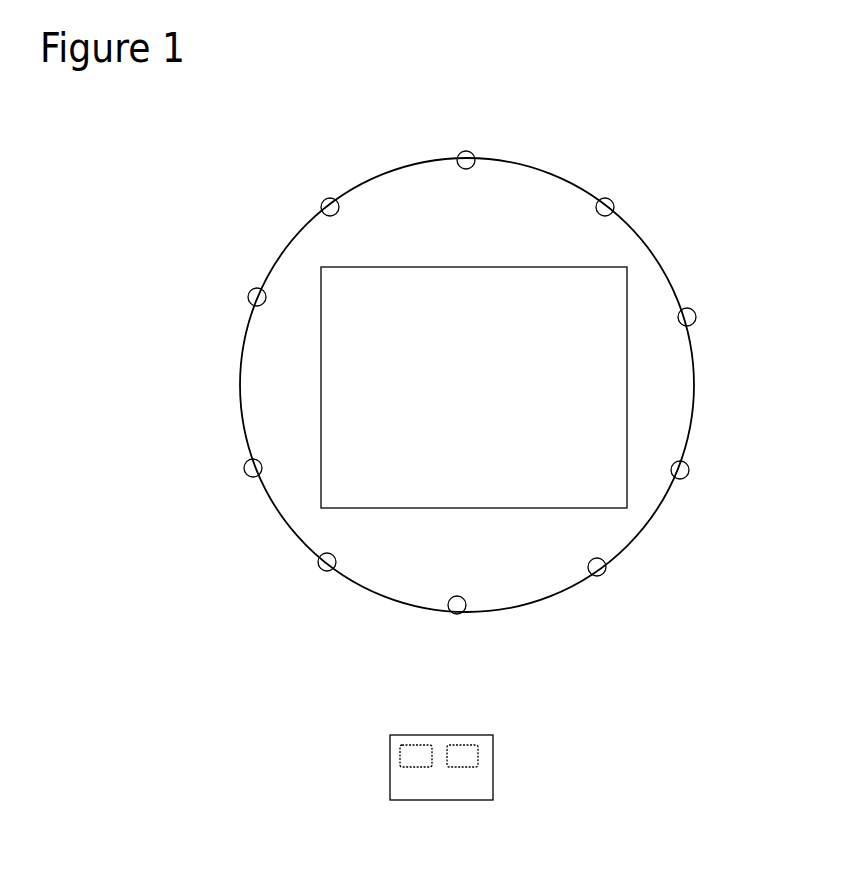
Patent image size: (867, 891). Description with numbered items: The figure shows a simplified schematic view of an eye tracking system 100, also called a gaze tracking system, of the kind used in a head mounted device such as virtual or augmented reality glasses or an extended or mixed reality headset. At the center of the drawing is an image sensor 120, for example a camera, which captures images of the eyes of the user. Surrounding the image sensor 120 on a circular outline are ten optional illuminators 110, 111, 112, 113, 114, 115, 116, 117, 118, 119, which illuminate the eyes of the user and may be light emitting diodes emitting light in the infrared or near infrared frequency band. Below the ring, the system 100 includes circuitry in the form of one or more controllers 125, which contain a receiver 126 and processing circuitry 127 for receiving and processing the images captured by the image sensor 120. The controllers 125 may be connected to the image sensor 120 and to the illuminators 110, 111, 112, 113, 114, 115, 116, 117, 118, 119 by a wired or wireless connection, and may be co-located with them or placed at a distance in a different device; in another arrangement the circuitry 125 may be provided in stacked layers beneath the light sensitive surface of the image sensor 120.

The eye tracking system 100 is at (203, 617).
The illuminator 110 is at (254, 290).
The illuminator 111 is at (327, 199).
The illuminator 112 is at (465, 152).
The illuminator 113 is at (607, 200).
The illuminator 114 is at (686, 310).
The illuminator 115 is at (685, 478).
The illuminator 116 is at (600, 576).
The illuminator 117 is at (455, 614).
The illuminator 118 is at (326, 572).
The illuminator 119 is at (248, 476).
The image sensor 120 is at (490, 266).
The controller 125 is at (430, 792).
The receiver 126 is at (407, 745).
The processing circuitry 127 is at (472, 745).